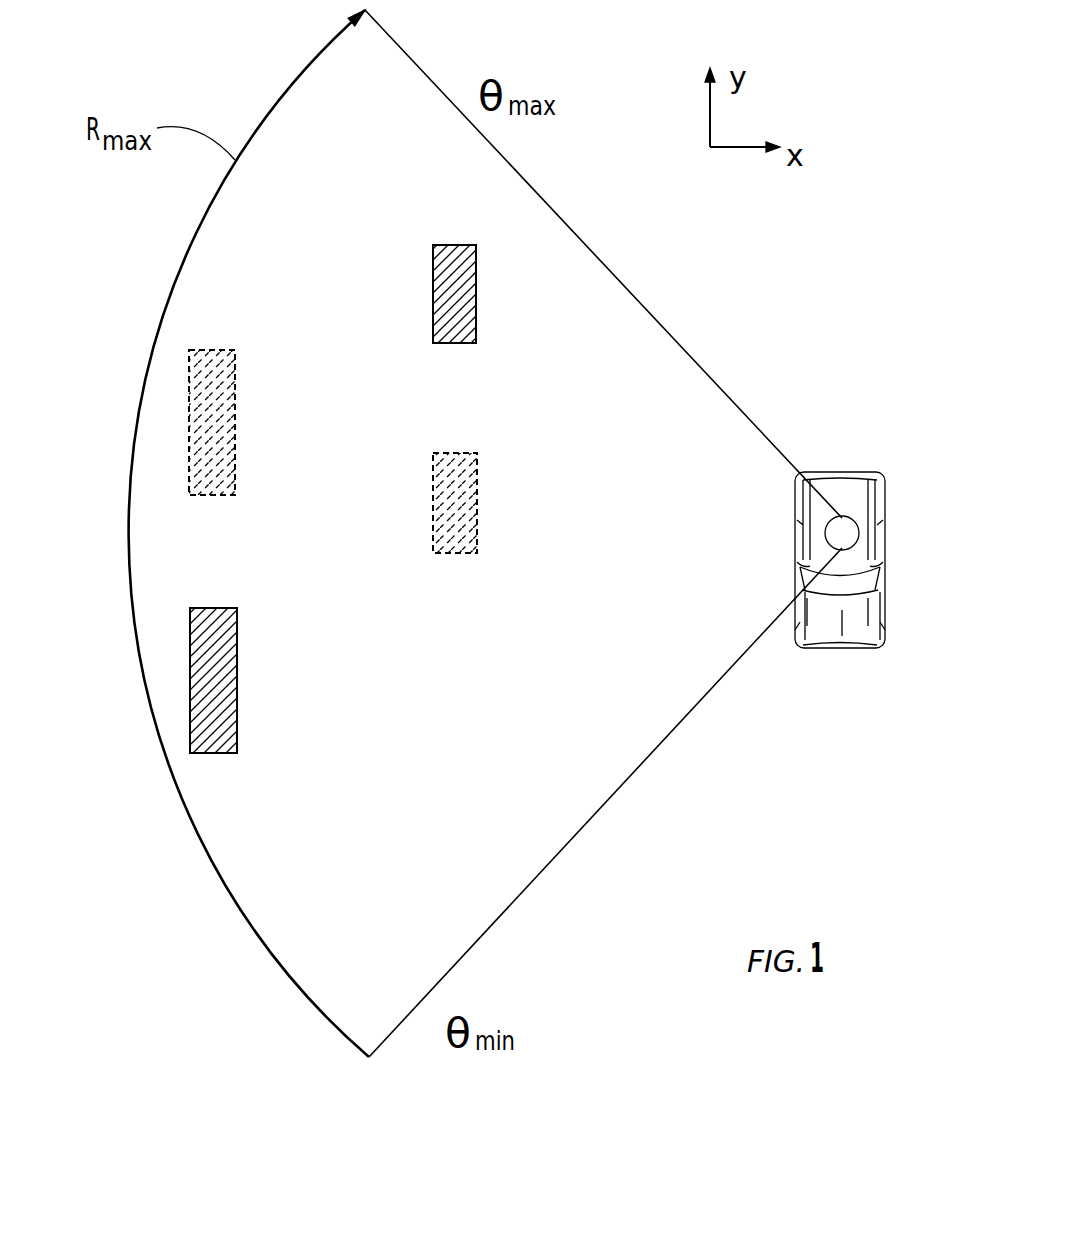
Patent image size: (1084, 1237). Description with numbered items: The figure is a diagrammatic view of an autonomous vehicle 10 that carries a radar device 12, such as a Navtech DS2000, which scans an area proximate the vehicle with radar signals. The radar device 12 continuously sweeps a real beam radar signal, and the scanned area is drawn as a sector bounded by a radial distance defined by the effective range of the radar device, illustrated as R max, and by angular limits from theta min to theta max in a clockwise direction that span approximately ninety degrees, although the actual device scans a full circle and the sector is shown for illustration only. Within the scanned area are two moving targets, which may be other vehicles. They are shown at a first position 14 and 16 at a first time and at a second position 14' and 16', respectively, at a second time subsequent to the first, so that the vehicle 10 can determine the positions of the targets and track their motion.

The autonomous vehicle 10 is at (840, 462).
The radar device 12 is at (860, 530).
The target 14 is at (493, 302).
The second position of target 14' is at (495, 503).
The target 16 is at (248, 680).
The second position of target 16' is at (243, 422).